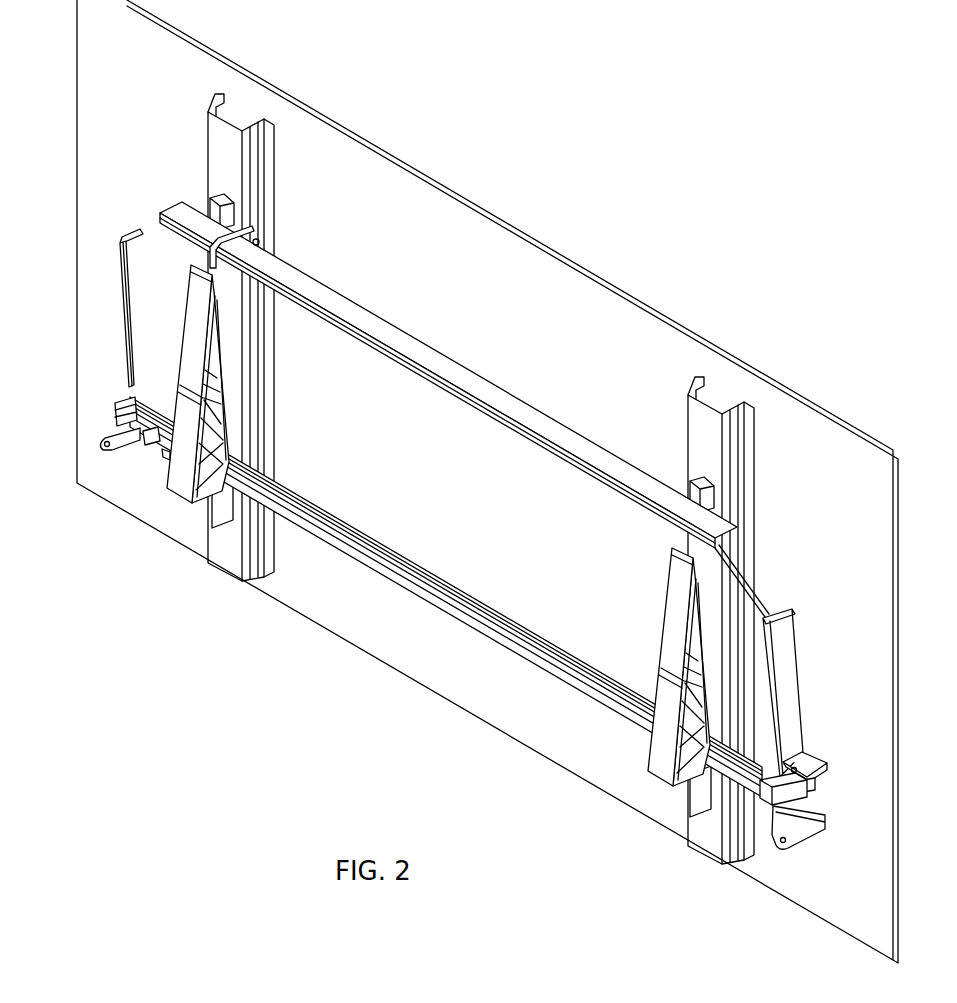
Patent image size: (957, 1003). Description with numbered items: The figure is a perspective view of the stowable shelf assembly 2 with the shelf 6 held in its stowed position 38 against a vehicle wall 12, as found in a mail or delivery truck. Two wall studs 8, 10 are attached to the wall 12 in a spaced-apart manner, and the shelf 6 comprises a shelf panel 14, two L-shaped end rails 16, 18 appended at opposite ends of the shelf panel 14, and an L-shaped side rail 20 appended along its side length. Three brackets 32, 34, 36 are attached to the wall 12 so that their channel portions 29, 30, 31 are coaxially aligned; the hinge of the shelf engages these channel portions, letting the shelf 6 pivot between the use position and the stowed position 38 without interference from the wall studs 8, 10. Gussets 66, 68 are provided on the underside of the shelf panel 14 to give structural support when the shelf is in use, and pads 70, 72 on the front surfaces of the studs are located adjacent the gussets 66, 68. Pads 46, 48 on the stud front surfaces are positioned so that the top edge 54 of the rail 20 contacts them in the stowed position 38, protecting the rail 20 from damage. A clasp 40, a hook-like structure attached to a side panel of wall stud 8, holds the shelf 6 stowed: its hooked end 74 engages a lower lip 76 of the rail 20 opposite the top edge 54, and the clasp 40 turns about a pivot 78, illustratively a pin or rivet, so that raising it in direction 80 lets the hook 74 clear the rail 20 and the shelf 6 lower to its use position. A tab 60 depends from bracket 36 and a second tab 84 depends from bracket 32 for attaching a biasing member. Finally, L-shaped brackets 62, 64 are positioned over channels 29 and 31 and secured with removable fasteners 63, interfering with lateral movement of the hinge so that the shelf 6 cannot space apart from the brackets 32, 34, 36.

The stowable shelf assembly 2 is at (51, 141).
The shelf 6 is at (111, 337).
The wall stud 8 is at (237, 117).
The wall stud 10 is at (720, 399).
The wall 12 is at (448, 196).
The shelf panel 14 is at (442, 480).
The end rail 16 is at (130, 231).
The end rail 18 is at (786, 690).
The side rail 20 is at (346, 316).
The channel portion 29 is at (149, 438).
The channel portion 30 is at (384, 568).
The channel portion 31 is at (782, 806).
The bracket 32 is at (165, 461).
The bracket 34 is at (503, 647).
The bracket 36 is at (812, 765).
The stowed position 38 is at (22, 400).
The clasp 40 is at (251, 228).
The pad 46 is at (218, 210).
The pad 48 is at (694, 492).
The top edge 54 is at (545, 413).
The tab 60 is at (800, 840).
The L-shaped bracket 62 is at (118, 425).
The fastener 63 is at (818, 782).
The L-shaped bracket 64 is at (796, 795).
The gusset 66 is at (200, 345).
The gusset 68 is at (679, 588).
The pad 70 is at (222, 493).
The pad 72 is at (707, 777).
The hooked end 74 is at (210, 258).
The lower lip 76 is at (358, 351).
The pivot 78 is at (262, 239).
The direction 80 is at (244, 251).
The second tab 84 is at (118, 448).